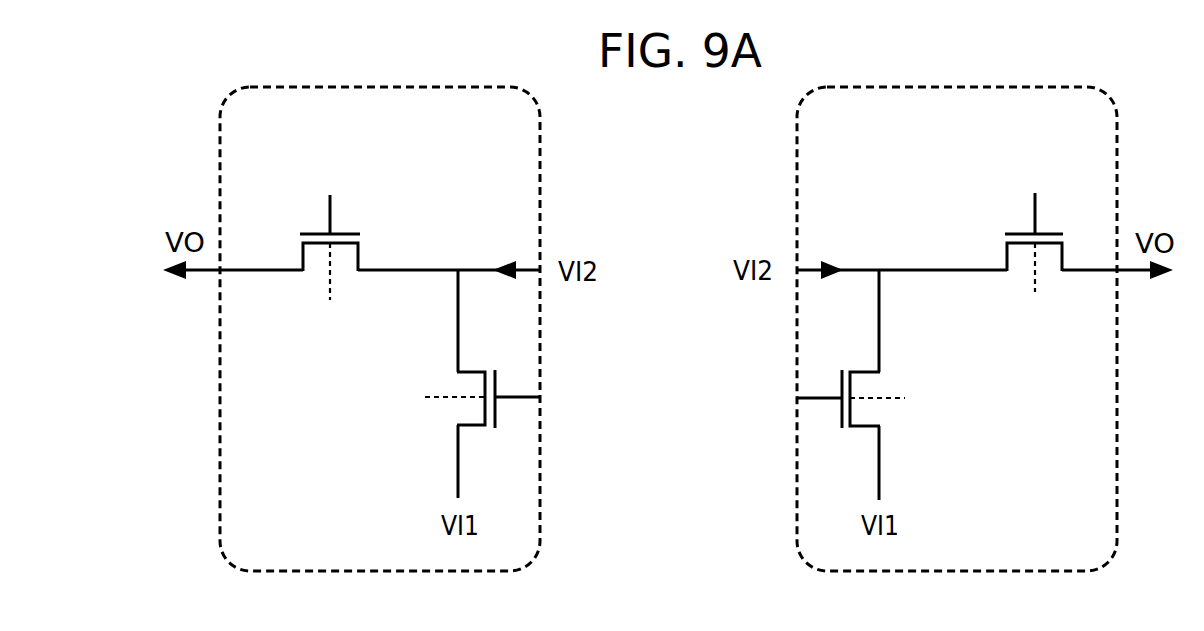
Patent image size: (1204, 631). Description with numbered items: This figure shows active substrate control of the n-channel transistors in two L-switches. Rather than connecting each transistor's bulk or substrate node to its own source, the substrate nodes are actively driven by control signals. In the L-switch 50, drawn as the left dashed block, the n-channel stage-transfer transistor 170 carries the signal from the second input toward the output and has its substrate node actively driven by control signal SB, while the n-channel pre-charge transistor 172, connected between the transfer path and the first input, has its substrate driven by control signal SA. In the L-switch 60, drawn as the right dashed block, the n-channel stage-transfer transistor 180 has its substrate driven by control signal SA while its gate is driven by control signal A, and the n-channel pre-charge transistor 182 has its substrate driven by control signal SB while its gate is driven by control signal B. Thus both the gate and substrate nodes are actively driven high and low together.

The L-switch 50 is at (343, 442).
The L-switch 60 is at (1067, 506).
The n-channel stage-transfer transistor 170 is at (303, 272).
The n-channel pre-charge transistor 172 is at (458, 370).
The n-channel stage-transfer transistor 180 is at (1007, 271).
The n-channel pre-charge transistor 182 is at (879, 428).